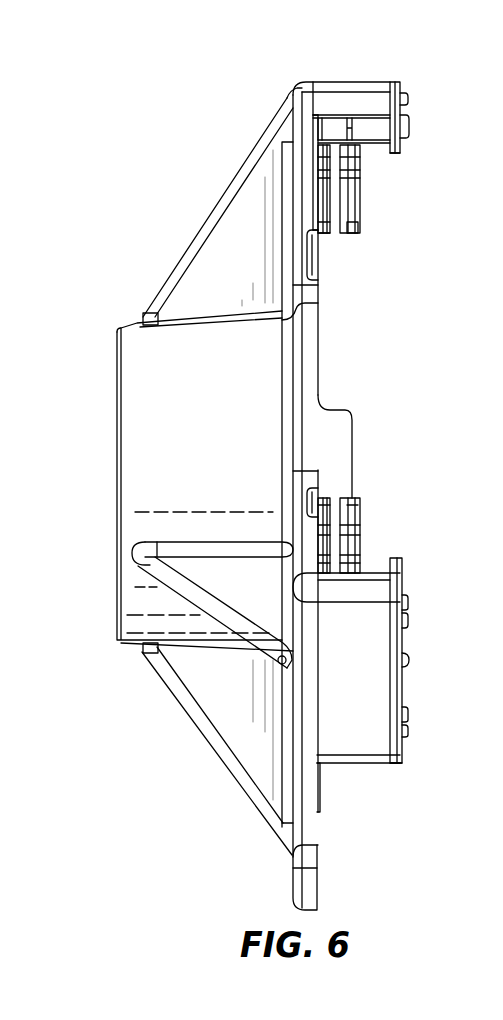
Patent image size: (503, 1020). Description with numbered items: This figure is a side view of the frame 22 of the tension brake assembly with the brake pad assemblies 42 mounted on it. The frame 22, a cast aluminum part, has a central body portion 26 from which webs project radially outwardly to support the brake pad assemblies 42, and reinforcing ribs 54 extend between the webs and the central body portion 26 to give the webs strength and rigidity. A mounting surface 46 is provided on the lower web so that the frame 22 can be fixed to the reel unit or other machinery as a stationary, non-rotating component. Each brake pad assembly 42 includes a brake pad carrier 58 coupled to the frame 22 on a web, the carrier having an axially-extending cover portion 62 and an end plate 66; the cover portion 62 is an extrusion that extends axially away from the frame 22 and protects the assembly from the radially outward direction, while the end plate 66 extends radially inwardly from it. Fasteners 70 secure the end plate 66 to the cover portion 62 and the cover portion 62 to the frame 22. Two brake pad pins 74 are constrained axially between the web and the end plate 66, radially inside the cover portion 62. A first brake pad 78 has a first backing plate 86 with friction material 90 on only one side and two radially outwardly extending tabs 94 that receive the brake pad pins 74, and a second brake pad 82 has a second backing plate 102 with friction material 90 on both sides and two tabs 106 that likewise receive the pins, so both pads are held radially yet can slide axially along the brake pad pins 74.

The frame 22 is at (145, 648).
The central body portion 26 is at (127, 335).
The brake pad assembly 42 is at (434, 125).
The mounting surface 46 is at (318, 895).
The reinforcing rib 54 is at (233, 267).
The brake pad carrier 58 is at (383, 767).
The cover portion 62 is at (330, 86).
The end plate 66 is at (403, 150).
The fastener 70 is at (408, 662).
The brake pad pin 74 is at (412, 124).
The first brake pad 78 is at (320, 238).
The second brake pad 82 is at (392, 224).
The first backing plate 86 is at (312, 246).
The friction material 90 is at (336, 199).
The tab 94 is at (297, 96).
The second backing plate 102 is at (350, 236).
The tab 106 is at (360, 130).